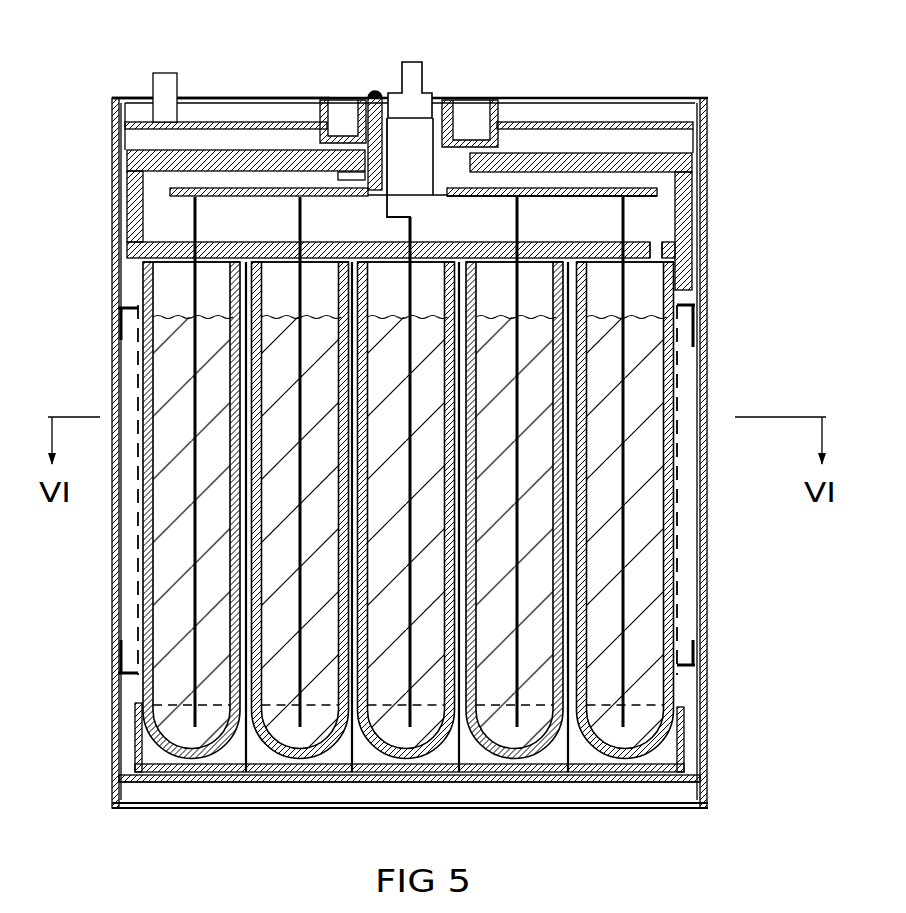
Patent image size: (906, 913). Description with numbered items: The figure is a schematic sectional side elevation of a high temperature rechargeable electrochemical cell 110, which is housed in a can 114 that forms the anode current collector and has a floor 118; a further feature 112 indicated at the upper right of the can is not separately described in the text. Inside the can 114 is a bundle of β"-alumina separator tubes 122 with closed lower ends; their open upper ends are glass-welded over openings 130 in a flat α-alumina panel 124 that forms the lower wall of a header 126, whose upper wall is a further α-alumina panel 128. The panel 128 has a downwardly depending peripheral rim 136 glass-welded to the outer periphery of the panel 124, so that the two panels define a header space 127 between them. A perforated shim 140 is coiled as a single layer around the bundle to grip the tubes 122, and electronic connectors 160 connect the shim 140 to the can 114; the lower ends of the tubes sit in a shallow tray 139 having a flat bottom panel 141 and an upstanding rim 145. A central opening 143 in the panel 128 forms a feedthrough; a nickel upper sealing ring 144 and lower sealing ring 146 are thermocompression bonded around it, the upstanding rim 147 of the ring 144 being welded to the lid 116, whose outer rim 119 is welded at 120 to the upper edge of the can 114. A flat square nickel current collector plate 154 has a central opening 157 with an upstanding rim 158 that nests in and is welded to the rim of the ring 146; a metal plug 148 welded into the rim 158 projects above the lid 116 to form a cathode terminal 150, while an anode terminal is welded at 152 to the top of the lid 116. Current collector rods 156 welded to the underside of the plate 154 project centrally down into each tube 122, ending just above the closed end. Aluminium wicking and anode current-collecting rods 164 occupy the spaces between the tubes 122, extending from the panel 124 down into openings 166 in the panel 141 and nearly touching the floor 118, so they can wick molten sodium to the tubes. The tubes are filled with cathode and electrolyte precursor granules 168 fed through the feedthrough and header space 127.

The high temperature rechargeable electrochemical cell 110 is at (727, 80).
The container 112 is at (730, 131).
The can 114 is at (700, 410).
The lid 116 is at (593, 124).
The floor 118 is at (604, 784).
The rim 119 is at (617, 110).
The weld 120 is at (120, 92).
The β"-alumina separator tubes 122 is at (645, 507).
The α-alumina panel 124 is at (600, 247).
The header 126 is at (543, 135).
The header space 127 is at (513, 142).
The α-alumina panel 128 is at (205, 160).
The openings 130 is at (662, 250).
The peripheral rim 136 is at (128, 195).
The tray 139 is at (686, 736).
The shim 140 is at (678, 438).
The bottom panel 141 is at (293, 770).
The central opening 143 is at (345, 158).
The upper sealing ring 144 is at (380, 118).
The upstanding rim 145 is at (136, 743).
The lower sealing ring 146 is at (365, 180).
The upstanding rim 147 is at (358, 140).
The metal plug 148 is at (460, 137).
The cathode terminal 150 is at (418, 105).
The anode terminal weld 152 is at (183, 73).
The current collector plate 154 is at (613, 193).
The current collector rods 156 is at (627, 617).
The central opening 157 is at (418, 160).
The upstanding rim 158 is at (377, 97).
The electronic connectors 160 is at (122, 335).
The wicking and anode current-collecting rod 164 is at (233, 750).
The openings 166 is at (437, 777).
The granules 168 is at (540, 418).